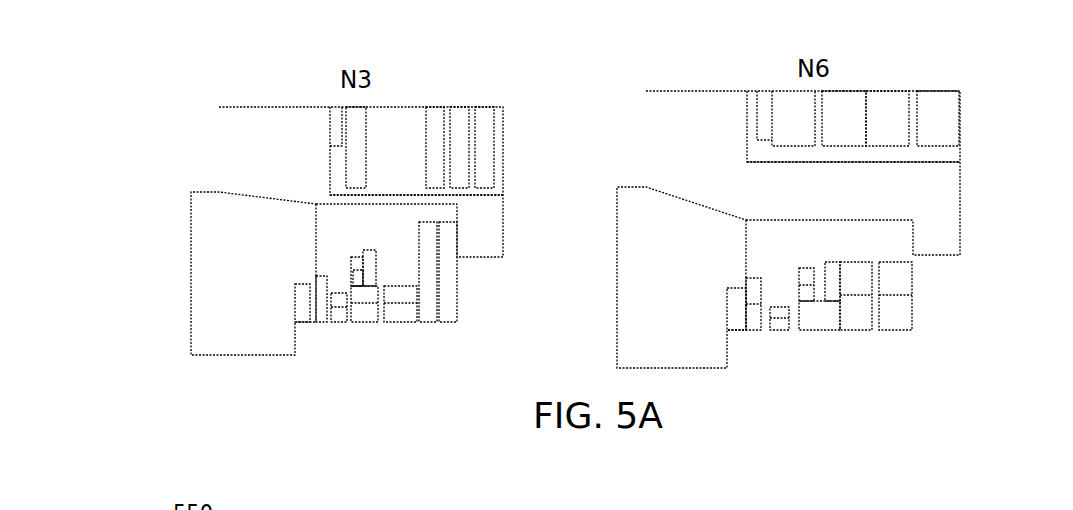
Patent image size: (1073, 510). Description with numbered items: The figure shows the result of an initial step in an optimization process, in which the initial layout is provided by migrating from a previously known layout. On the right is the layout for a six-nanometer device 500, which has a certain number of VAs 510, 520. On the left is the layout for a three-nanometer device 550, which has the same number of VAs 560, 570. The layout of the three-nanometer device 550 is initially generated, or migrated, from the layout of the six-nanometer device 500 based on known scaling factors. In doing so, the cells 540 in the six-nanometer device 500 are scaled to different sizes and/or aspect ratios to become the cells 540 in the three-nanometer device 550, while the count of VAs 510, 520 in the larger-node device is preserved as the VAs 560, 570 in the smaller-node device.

The 3-nm device 550 is at (384, 43).
The VA 560 is at (456, 93).
The VA 570 is at (382, 347).
The cells 540 is at (412, 187).
The 6-nm device 500 is at (836, 43).
The VA 510 is at (912, 72).
The VA 520 is at (829, 355).